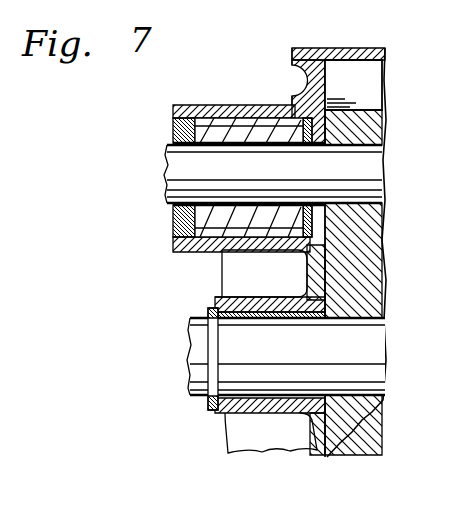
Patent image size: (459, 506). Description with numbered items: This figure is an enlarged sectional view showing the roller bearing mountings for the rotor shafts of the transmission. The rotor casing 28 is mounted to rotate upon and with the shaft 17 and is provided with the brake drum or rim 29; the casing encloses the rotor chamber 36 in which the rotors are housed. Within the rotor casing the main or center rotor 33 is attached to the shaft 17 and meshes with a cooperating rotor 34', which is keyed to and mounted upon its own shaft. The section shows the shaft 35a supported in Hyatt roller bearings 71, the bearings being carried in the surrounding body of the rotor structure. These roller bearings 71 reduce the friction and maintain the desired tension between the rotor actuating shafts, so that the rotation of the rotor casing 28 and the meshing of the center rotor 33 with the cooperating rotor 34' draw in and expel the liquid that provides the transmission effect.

The shaft 17 is at (368, 347).
The rotor casing 28 is at (300, 81).
The brake drum or rim 29 is at (349, 56).
The main or center rotor 33 is at (364, 288).
The cooperating rotor 34' is at (373, 127).
The shaft 35a is at (273, 174).
The rotor chamber 36 is at (360, 72).
The roller bearings 71 is at (220, 127).